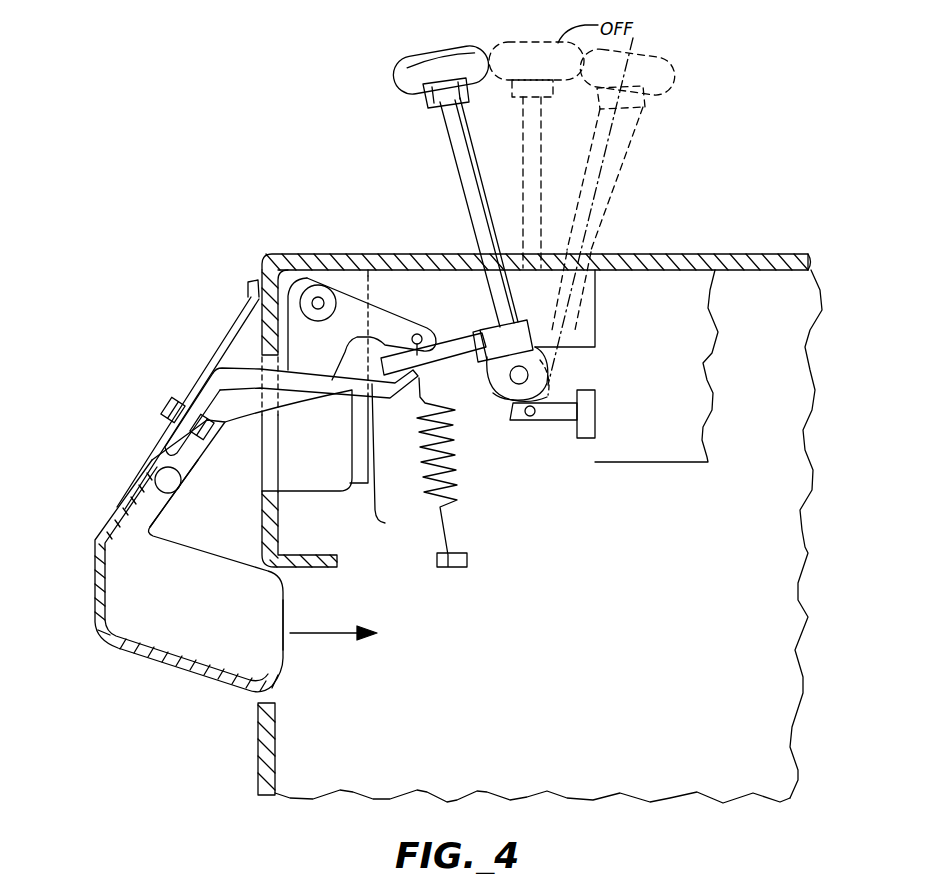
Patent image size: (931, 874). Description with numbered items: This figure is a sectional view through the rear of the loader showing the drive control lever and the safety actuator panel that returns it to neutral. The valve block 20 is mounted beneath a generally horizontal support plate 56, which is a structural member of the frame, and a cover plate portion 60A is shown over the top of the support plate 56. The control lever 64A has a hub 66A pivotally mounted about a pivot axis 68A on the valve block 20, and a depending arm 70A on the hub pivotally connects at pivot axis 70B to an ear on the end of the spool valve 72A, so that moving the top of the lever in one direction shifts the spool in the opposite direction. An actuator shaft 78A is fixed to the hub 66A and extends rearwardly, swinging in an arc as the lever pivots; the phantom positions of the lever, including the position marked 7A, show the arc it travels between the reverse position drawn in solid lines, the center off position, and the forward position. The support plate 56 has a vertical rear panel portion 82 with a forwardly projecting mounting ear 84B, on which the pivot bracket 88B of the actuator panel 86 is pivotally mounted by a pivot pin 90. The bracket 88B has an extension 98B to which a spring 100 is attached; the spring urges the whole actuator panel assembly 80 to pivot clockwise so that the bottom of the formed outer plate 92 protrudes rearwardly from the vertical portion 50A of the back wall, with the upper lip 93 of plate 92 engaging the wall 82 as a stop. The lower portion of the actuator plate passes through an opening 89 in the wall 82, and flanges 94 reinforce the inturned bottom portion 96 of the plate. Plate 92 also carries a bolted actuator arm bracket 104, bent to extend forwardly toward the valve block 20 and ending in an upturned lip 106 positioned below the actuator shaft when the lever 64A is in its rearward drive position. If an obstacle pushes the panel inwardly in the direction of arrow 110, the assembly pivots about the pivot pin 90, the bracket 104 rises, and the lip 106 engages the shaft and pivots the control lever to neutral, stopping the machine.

The valve block 20 is at (677, 452).
The support plate 56 is at (680, 252).
The control lever 64A is at (452, 172).
The lever phantom position 7A is at (607, 145).
The pivot pin 90 is at (323, 297).
The extension 98B is at (387, 317).
The upper lip 93 is at (255, 280).
The pivot bracket 88B is at (297, 350).
The actuator shaft 78A is at (477, 357).
The bracket 60A is at (577, 347).
The hub 66A is at (547, 375).
The depending arm 70A is at (548, 397).
The pivot axis 68A is at (497, 390).
The pivot axis 70B is at (531, 418).
The spool valve 72A is at (583, 440).
The actuator arm bracket 104 is at (288, 395).
The actuator panel assembly 80 is at (137, 462).
The opening 89 is at (266, 445).
The actuator panel 86 is at (192, 582).
The vertical rear panel portion 82 is at (262, 508).
The mounting ear 84B is at (352, 500).
The upturned lip 106 is at (399, 459).
The spring 100 is at (444, 505).
The formed outer plate 92 is at (100, 597).
The inturned bottom portion 96 is at (177, 668).
The flange 94 is at (288, 660).
The arrow 110 is at (320, 630).
The vertical portion 50A is at (277, 730).